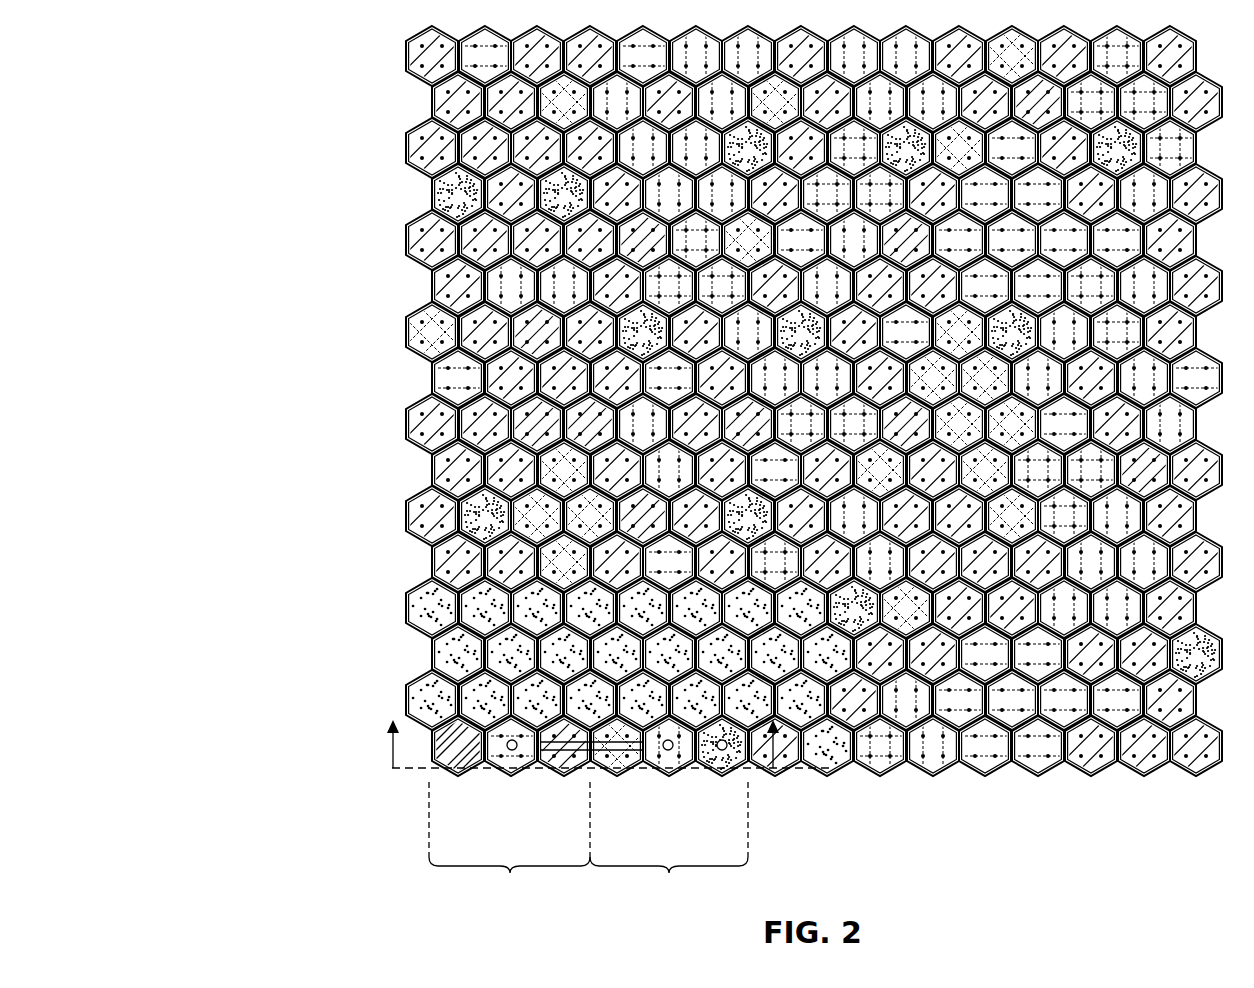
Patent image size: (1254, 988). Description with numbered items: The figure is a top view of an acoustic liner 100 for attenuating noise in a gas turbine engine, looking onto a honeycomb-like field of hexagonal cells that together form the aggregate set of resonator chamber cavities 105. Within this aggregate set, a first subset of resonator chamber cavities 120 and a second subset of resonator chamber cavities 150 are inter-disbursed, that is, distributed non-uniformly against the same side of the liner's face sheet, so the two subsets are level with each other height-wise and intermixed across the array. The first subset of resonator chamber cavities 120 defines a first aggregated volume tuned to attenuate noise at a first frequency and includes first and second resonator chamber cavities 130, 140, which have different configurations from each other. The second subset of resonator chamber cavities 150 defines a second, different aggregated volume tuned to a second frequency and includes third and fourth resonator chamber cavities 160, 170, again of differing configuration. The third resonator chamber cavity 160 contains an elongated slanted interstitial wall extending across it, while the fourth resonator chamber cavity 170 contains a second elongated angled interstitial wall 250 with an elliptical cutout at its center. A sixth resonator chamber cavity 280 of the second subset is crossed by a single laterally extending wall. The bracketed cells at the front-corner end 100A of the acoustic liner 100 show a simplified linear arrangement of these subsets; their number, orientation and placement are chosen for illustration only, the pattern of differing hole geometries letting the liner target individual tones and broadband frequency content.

The acoustic liner 100 is at (306, 260).
The aggregate set of resonator chamber cavities 105 is at (304, 166).
The front-corner end 100A is at (322, 681).
The first subset of resonator chamber cavities 120 is at (669, 846).
The first resonator chamber cavity 130 is at (738, 762).
The second resonator chamber cavity 140 is at (677, 758).
The second subset of resonator chamber cavities 150 is at (509, 846).
The third resonator chamber cavity 160 is at (433, 768).
The fourth resonator chamber cavity 170 is at (497, 758).
The second elongated angled interstitial wall 250 is at (613, 758).
The sixth resonator chamber cavity 280 is at (555, 757).